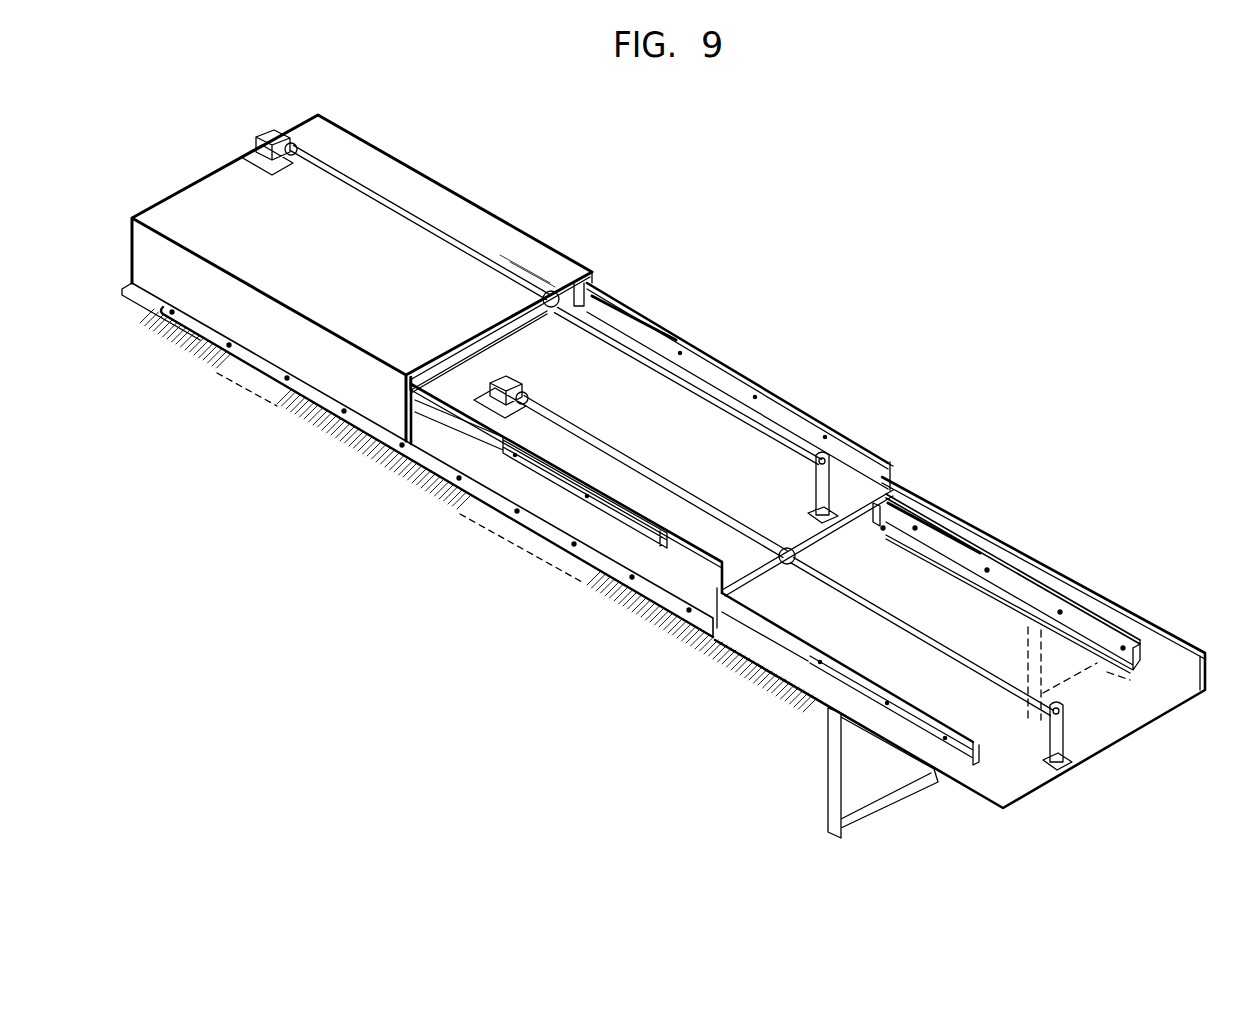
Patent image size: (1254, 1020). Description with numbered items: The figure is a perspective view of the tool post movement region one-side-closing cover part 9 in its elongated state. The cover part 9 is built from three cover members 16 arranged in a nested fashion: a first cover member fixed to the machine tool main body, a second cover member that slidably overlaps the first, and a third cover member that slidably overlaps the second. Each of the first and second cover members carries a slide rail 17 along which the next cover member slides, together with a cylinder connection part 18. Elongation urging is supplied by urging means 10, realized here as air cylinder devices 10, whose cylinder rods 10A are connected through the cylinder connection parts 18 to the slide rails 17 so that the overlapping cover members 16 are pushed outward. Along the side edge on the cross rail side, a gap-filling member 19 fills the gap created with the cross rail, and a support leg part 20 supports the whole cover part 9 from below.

The tool post movement region one-side-closing cover part 9 is at (654, 281).
The urging means (air cylinder device) 10 is at (421, 241).
The cylinder rod 10A is at (642, 356).
The cover member 16 is at (453, 187).
The slide rail 17 is at (713, 358).
The cylinder connection part 18 is at (828, 480).
The gap-filling member 19 is at (483, 527).
The support leg part 20 is at (827, 788).